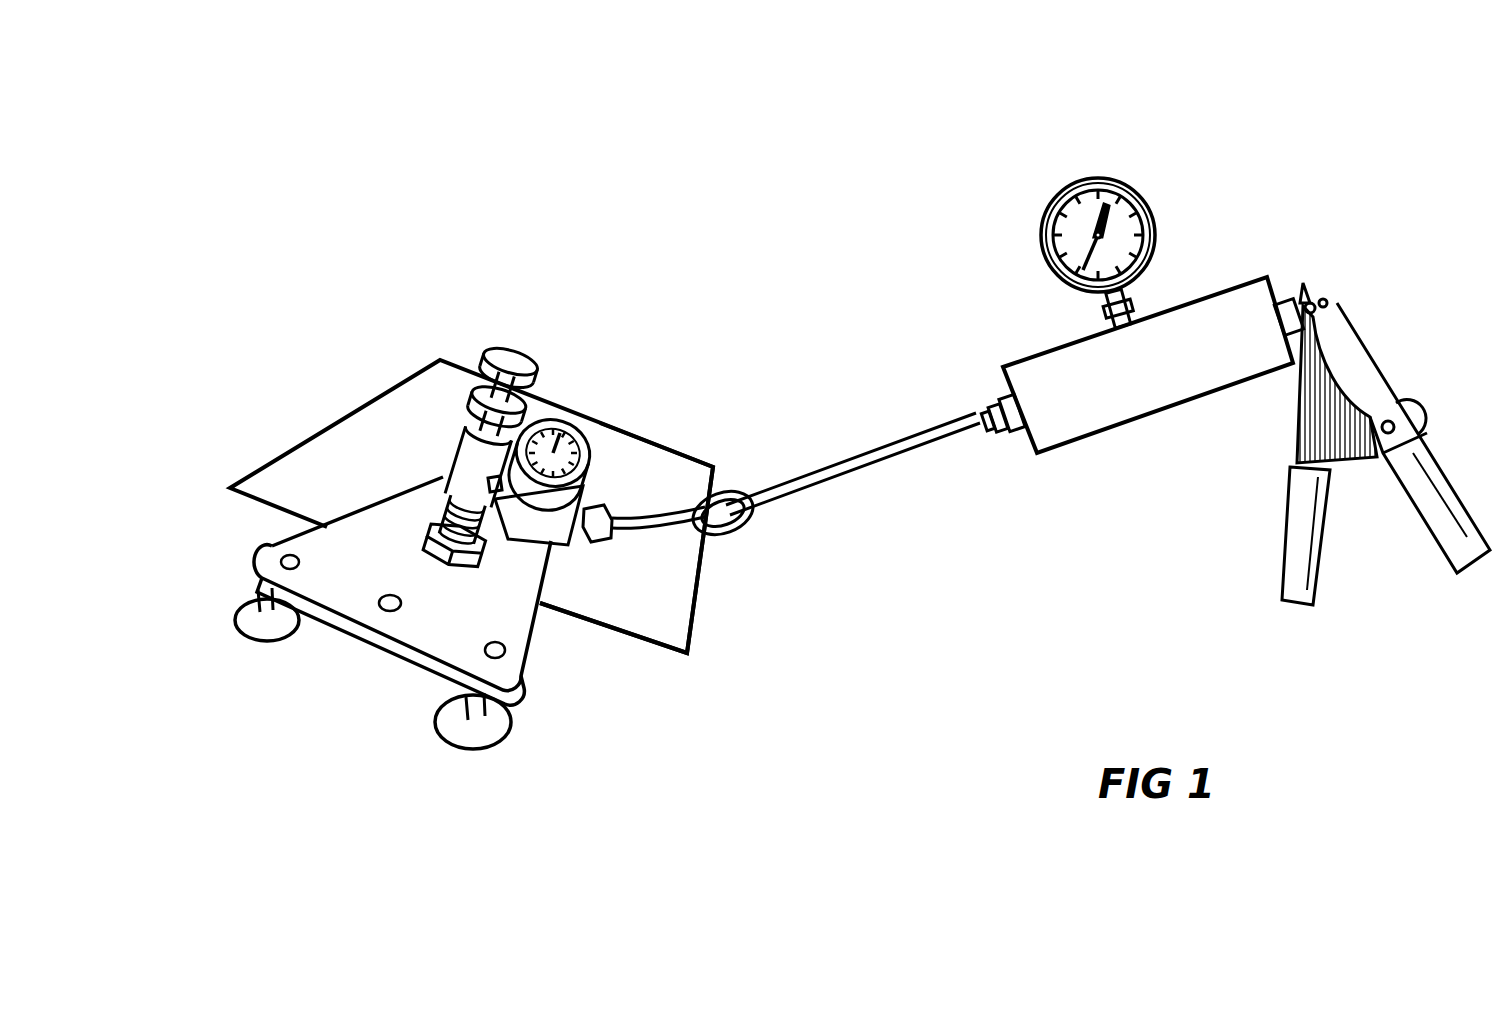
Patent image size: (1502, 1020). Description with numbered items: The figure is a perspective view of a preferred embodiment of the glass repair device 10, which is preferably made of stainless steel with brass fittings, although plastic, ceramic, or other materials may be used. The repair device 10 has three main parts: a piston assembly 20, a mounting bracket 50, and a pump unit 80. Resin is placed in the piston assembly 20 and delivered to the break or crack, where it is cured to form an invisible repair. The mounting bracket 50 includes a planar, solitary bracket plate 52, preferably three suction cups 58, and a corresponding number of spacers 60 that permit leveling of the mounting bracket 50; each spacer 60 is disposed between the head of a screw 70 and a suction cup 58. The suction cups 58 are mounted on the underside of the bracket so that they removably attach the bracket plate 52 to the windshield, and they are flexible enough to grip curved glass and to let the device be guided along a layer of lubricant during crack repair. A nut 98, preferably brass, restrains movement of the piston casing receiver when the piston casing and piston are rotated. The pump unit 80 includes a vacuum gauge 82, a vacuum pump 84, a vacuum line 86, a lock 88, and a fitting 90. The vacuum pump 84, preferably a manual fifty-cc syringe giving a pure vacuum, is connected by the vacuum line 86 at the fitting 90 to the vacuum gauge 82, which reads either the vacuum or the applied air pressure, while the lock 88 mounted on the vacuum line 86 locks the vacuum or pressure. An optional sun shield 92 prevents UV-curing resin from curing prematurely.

The repair device 10 is at (230, 218).
The piston assembly 20 is at (443, 430).
The mounting bracket 50 is at (409, 633).
The bracket plate 52 is at (485, 622).
The suction cup 58 is at (250, 622).
The spacer 60 is at (258, 595).
The screw 70 is at (284, 555).
The pump unit 80 is at (1246, 345).
The vacuum gauge 82 is at (552, 425).
The vacuum pump 84 is at (1150, 400).
The vacuum line 86 is at (875, 470).
The lock 88 is at (725, 535).
The fitting 90 is at (537, 515).
The sun shield 92 is at (655, 462).
The nut 98 is at (480, 560).